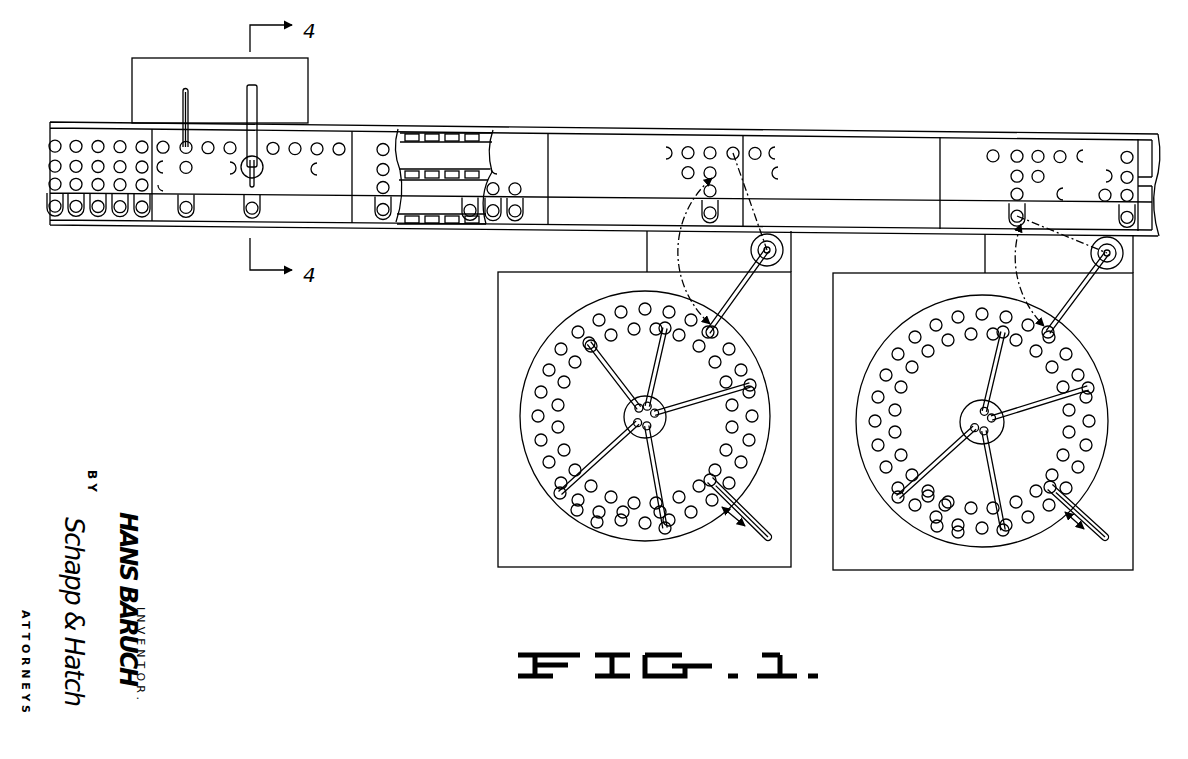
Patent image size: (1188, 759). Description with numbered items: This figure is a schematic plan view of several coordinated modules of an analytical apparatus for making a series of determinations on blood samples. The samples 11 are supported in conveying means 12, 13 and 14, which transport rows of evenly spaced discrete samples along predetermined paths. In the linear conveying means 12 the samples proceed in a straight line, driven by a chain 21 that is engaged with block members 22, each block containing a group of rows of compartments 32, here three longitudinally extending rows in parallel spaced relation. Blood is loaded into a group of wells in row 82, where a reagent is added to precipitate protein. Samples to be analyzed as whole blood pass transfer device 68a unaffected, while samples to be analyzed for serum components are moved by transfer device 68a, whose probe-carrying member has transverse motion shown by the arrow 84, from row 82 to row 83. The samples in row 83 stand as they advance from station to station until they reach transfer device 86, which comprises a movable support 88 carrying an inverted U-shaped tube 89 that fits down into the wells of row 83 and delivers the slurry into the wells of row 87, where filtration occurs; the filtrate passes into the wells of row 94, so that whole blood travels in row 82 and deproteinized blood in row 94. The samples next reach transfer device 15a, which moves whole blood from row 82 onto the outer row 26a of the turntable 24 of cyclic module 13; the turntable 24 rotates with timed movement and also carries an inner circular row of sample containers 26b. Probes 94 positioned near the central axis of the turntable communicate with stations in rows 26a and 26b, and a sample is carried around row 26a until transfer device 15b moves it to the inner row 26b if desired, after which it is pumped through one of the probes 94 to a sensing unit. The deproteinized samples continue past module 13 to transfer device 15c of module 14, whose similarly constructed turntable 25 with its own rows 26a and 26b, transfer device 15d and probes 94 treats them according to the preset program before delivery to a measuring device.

The samples 11 is at (339, 142).
The conveying means 12 is at (612, 108).
The cyclic module 13 is at (572, 267).
The cyclic module 14 is at (913, 270).
The transfer device 15a is at (786, 262).
The transfer device 15b is at (766, 517).
The transfer device 15c is at (1092, 293).
The transfer device 15d is at (1092, 511).
The chain 21 is at (421, 171).
The block members 22 is at (348, 233).
The turntable 24 is at (530, 440).
The turntable 25 is at (866, 445).
The outer circular row of sample containers 26a is at (597, 526).
The inner circular row of sample containers 26b is at (660, 516).
The compartments 32 is at (121, 173).
The transfer device 68a is at (193, 95).
The row 82 is at (52, 148).
The row 83 is at (52, 167).
The arrow 84 is at (175, 141).
The transfer device 86 is at (260, 93).
The row 87 is at (52, 185).
The movable support 88 is at (260, 118).
The inverted U-shaped tube 89 is at (262, 174).
The row of sample containers / probes 94 is at (52, 208).